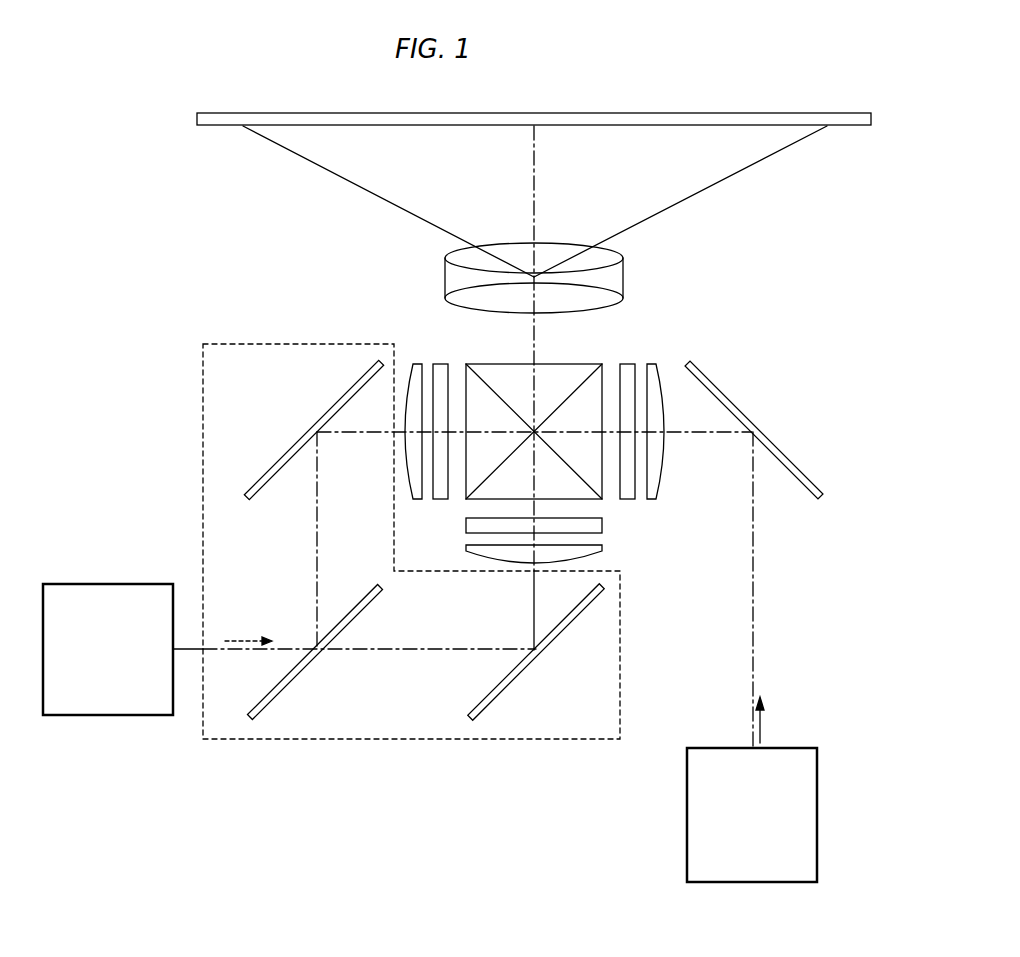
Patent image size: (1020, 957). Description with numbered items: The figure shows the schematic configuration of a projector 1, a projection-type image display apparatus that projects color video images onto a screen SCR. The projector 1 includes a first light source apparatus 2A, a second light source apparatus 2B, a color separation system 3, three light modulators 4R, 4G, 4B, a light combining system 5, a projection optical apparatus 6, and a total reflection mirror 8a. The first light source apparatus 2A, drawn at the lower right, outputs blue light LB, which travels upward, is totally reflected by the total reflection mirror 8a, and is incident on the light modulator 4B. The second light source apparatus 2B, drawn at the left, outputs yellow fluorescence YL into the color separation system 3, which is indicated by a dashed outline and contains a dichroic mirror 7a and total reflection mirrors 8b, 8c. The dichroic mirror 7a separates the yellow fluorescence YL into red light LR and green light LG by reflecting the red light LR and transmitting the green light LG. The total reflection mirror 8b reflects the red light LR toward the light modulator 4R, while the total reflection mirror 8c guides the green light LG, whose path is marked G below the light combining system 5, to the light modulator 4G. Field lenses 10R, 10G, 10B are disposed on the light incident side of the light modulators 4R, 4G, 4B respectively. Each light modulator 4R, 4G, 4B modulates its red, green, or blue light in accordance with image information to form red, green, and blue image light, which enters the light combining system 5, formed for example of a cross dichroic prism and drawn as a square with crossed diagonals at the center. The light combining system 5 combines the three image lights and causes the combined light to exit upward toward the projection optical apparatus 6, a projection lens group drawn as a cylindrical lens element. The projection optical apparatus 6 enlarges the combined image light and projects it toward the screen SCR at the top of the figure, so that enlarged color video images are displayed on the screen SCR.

The projector 1 is at (826, 321).
The first light source apparatus 2A is at (687, 838).
The second light source apparatus 2B is at (95, 715).
The color separation system 3 is at (203, 486).
The light modulator 4R is at (440, 363).
The light modulator 4G is at (466, 525).
The light modulator 4B is at (630, 363).
The light combining system 5 is at (548, 372).
The projection optical apparatus 6 is at (516, 254).
The dichroic mirror 7a is at (285, 690).
The total reflection mirror 8a is at (780, 448).
The total reflection mirror 8b is at (290, 447).
The total reflection mirror 8c is at (515, 683).
The field lens 10R is at (415, 363).
The field lens 10G is at (466, 548).
The field lens 10B is at (655, 363).
The blue light LB is at (753, 630).
The red light LR is at (317, 540).
The green light LG is at (385, 652).
The yellow fluorescence YL is at (240, 641).
The green light path G is at (534, 607).
The screen SCR is at (847, 126).